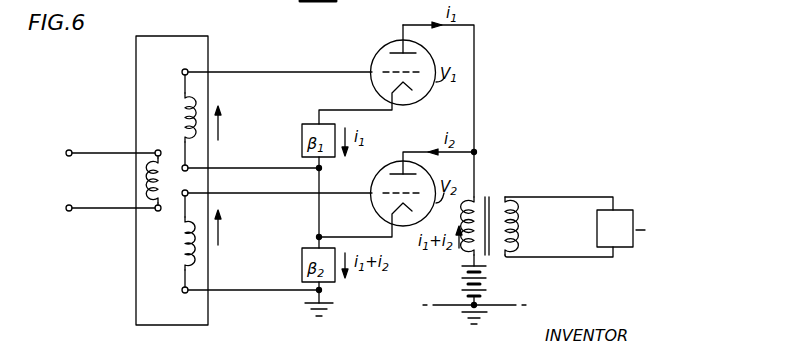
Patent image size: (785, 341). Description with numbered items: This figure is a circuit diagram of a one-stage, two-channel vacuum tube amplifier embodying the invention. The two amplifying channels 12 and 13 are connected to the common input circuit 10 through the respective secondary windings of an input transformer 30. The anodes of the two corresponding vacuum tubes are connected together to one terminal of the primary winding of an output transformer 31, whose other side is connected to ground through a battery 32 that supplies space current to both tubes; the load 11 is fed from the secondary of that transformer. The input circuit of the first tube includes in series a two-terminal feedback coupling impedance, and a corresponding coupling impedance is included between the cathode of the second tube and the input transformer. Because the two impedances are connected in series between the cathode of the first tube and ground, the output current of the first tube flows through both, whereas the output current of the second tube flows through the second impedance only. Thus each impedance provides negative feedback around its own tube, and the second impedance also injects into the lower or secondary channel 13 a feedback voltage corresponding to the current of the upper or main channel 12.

The common input circuit 10 is at (100, 155).
The load circuit 11 is at (563, 212).
The upper or main amplifying channel 12 is at (224, 120).
The lower or secondary amplifying channel 13 is at (224, 241).
The input transformer 30 is at (208, 47).
The output transformer 31 is at (490, 195).
The battery 32 is at (486, 273).